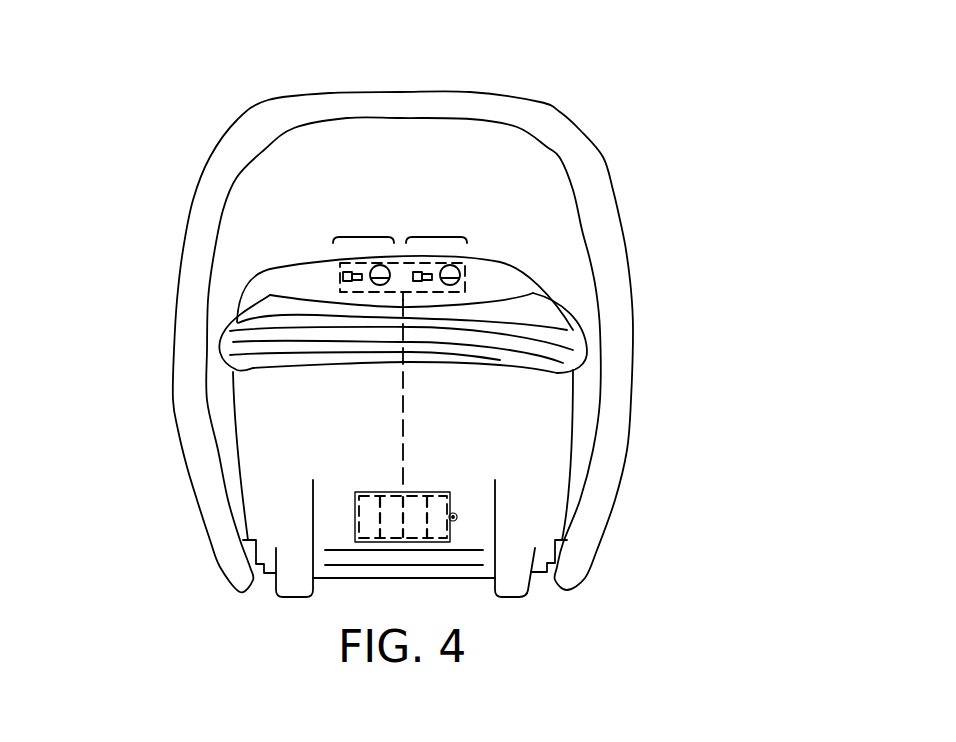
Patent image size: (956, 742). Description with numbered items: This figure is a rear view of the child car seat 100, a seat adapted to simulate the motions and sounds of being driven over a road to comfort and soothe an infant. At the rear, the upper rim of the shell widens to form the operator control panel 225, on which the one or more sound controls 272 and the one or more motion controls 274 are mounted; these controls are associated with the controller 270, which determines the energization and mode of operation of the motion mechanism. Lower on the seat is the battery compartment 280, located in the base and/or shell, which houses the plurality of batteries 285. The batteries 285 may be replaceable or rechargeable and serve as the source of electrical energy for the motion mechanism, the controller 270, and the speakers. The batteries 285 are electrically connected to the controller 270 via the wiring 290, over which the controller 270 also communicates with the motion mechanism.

The child car seat 100 is at (649, 89).
The operator control panel 225 is at (512, 277).
The controller 270 is at (340, 290).
The sound controls 272 is at (432, 237).
The motion controls 274 is at (362, 237).
The battery compartment 280 is at (355, 542).
The plurality of batteries 285 is at (392, 512).
The wiring 290 is at (403, 402).